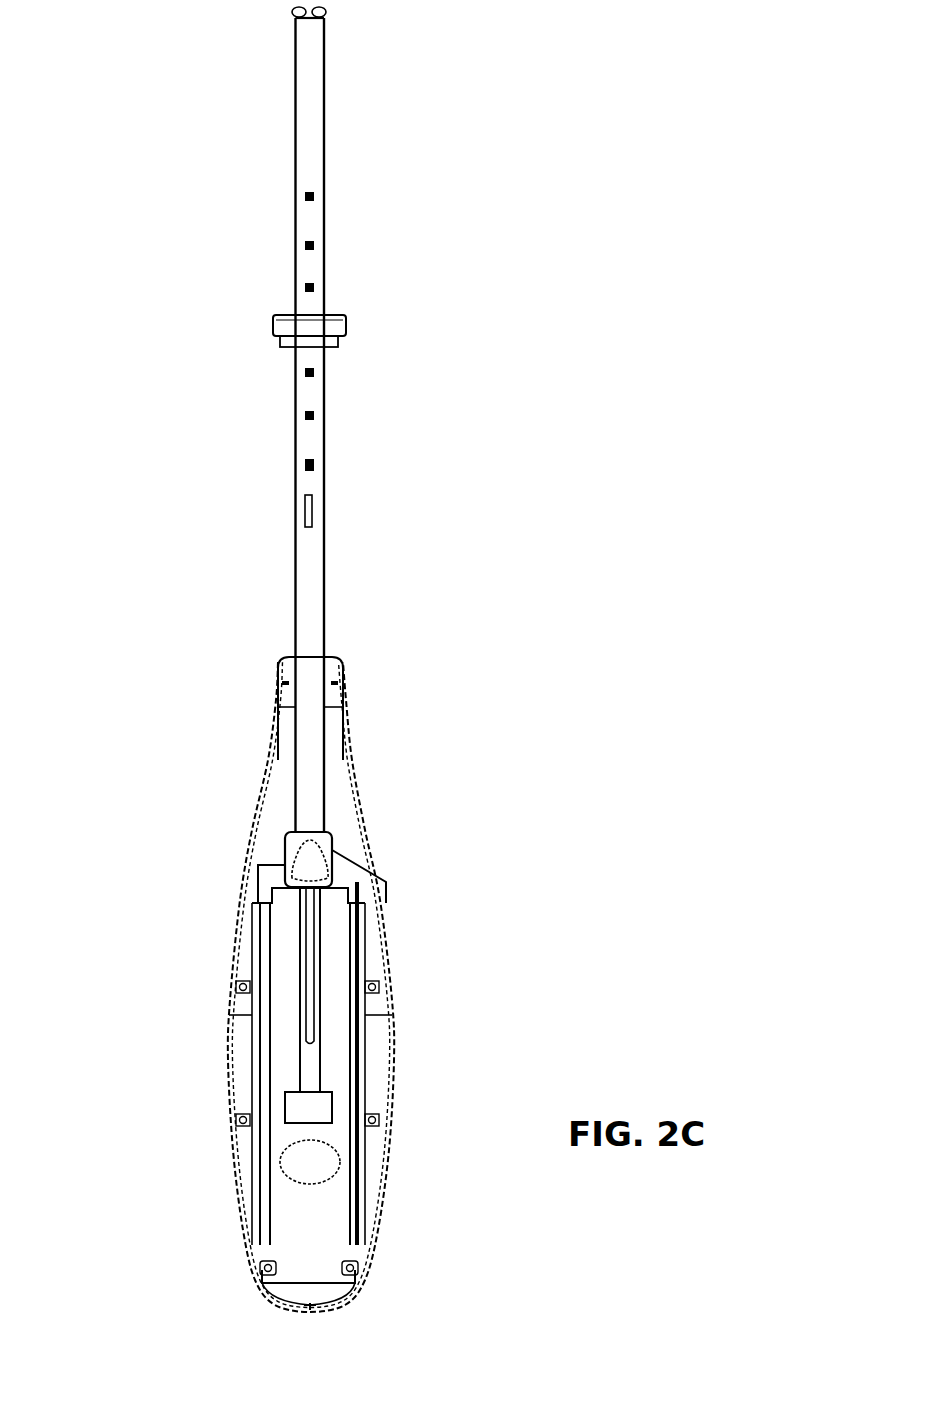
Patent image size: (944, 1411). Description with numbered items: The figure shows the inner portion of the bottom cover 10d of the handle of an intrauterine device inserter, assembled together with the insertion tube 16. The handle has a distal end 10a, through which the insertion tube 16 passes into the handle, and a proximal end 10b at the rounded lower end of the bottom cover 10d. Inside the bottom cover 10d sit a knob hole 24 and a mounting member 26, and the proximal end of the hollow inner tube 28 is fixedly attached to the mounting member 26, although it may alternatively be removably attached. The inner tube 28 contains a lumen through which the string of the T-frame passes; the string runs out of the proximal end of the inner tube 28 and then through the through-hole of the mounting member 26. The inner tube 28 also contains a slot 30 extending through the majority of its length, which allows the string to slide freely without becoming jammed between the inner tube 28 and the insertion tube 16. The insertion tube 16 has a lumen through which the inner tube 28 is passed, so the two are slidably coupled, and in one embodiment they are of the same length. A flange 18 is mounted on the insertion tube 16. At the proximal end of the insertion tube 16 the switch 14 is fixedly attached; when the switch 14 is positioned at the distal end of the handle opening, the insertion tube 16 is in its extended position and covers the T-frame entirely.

The insertion tube 16 is at (325, 118).
The flange 18 is at (352, 331).
The distal end 10a is at (325, 673).
The bottom cover 10d is at (246, 910).
The proximal end 10b is at (368, 1289).
The switch 14 is at (284, 861).
The inner tube 28 is at (299, 1015).
The slot 30 is at (308, 1033).
The mounting member 26 is at (286, 1096).
The knob hole 24 is at (282, 1162).